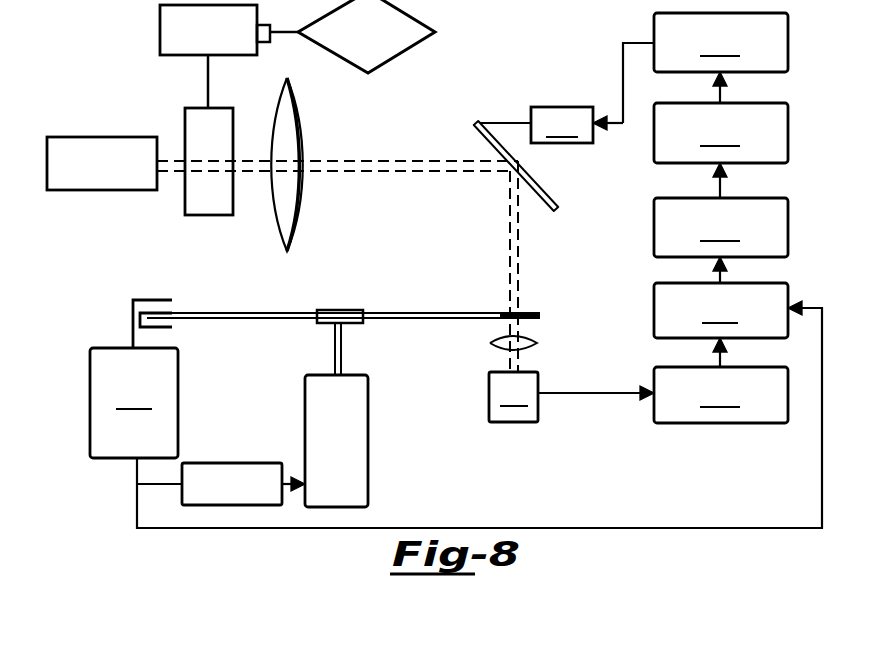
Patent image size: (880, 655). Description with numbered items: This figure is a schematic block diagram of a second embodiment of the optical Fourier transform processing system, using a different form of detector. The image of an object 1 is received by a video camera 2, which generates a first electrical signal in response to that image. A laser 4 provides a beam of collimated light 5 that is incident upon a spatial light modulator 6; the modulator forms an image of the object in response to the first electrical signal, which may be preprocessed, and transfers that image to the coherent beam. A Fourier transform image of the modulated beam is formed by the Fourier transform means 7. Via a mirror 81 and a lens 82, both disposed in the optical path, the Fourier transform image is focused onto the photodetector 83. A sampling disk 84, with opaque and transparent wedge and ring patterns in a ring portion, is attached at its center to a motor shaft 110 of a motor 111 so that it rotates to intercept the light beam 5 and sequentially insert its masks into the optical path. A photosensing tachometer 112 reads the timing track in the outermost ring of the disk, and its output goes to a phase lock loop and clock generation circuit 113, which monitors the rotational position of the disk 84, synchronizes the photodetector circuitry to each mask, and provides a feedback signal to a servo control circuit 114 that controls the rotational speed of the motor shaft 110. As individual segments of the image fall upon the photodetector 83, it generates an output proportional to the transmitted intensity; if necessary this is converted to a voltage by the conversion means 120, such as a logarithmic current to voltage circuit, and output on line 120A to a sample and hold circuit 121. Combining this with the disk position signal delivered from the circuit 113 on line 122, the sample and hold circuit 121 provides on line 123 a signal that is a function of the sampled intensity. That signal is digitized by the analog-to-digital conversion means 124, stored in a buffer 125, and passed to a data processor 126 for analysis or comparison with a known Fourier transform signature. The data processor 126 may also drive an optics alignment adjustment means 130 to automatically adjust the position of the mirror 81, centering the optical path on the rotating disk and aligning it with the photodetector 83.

The object 1 is at (408, 14).
The video camera 2 is at (160, 32).
The laser 4 is at (82, 137).
The beam of collimated light 5 is at (397, 160).
The spatial light modulator 6 is at (185, 125).
The Fourier transform means 7 is at (292, 104).
The mirror 81 is at (546, 191).
The lens 82 is at (538, 341).
The photodetector 83 is at (571, 397).
The sampling disk 84 is at (298, 312).
The motor shaft 110 is at (341, 348).
The motor 111 is at (354, 470).
The photosensing tachometer 112 is at (162, 298).
The phase lock loop and clock generation circuit 113 is at (134, 403).
The servo control circuit 114 is at (224, 463).
The current to voltage conversion means 120 is at (721, 395).
The line 120A is at (724, 360).
The sample and hold circuit 121 is at (721, 310).
The line 122 is at (622, 528).
The line 123 is at (723, 276).
The analog-to-digital conversion means 124 is at (721, 210).
The buffer 125 is at (721, 117).
The data processor 126 is at (721, 42).
The optics alignment adjustment means 130 is at (592, 93).